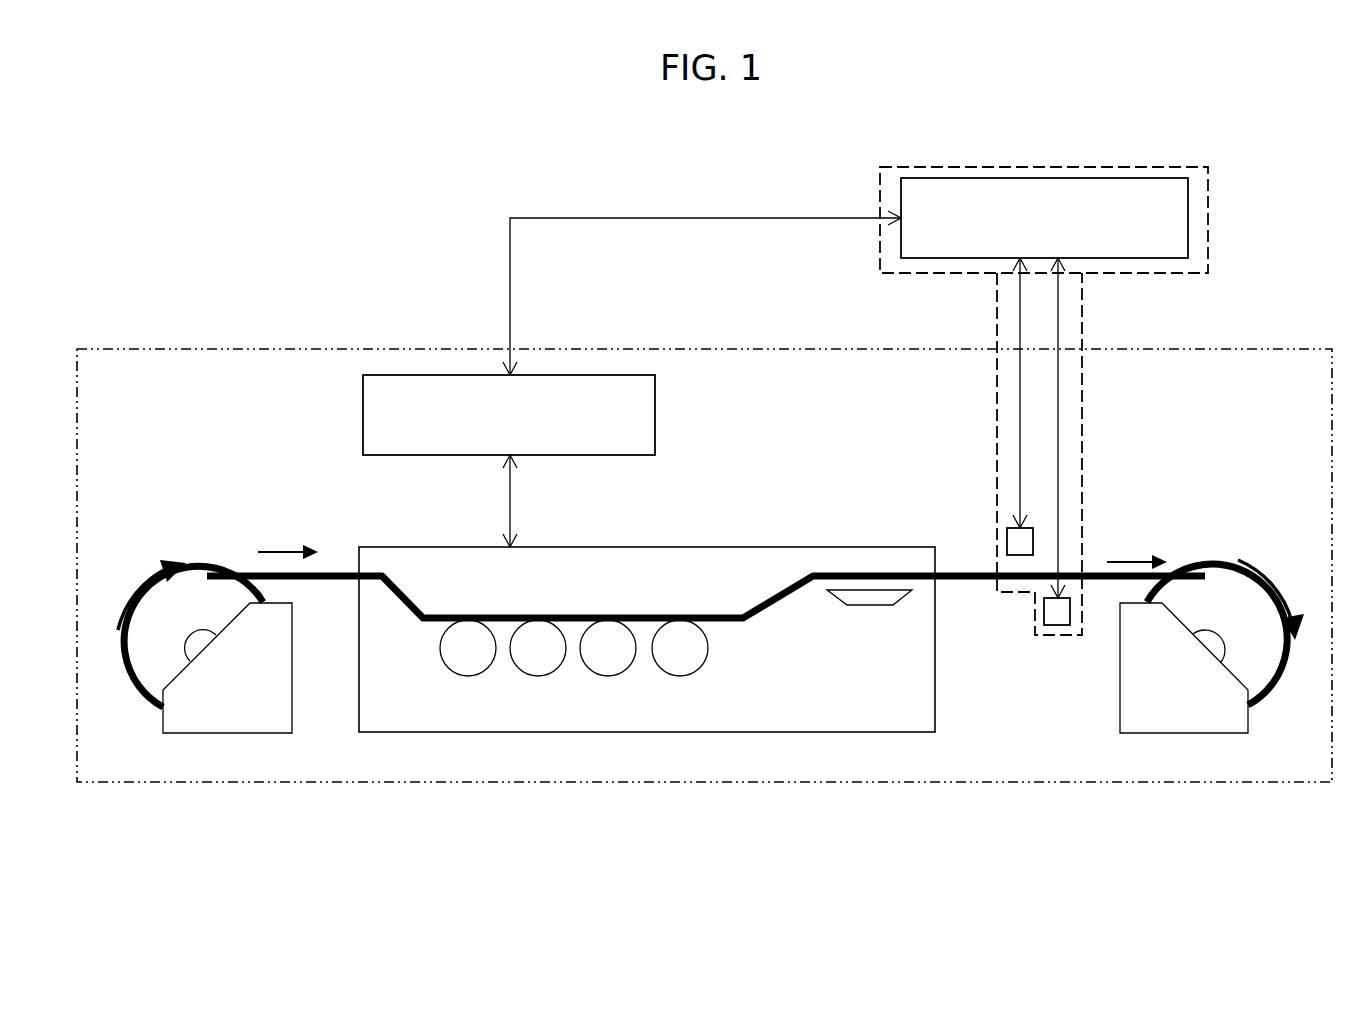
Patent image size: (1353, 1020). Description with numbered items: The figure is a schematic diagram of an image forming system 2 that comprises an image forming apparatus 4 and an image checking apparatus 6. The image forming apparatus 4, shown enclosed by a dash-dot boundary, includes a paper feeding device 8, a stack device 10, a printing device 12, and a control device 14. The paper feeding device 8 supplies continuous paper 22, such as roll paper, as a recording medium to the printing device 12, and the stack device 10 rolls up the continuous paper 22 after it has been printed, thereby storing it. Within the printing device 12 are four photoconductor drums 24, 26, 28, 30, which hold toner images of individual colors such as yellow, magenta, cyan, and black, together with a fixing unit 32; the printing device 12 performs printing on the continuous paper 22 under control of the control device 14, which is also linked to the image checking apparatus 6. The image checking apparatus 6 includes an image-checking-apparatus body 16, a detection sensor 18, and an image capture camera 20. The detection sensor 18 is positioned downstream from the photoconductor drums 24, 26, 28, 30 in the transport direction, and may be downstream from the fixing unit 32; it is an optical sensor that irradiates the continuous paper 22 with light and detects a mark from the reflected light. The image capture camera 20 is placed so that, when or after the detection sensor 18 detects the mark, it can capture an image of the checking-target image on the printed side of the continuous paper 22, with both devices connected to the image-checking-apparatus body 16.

The image forming system 2 is at (352, 214).
The image forming apparatus 4 is at (1238, 348).
The image checking apparatus 6 is at (1107, 165).
The paper feeding device 8 is at (292, 695).
The stack device 10 is at (1120, 705).
The printing device 12 is at (683, 545).
The control device 14 is at (655, 395).
The image-checking-apparatus body 16 is at (1188, 228).
The detection sensor 18 is at (1007, 535).
The image capture camera 20 is at (1043, 618).
The continuous paper 22 is at (337, 573).
The photoconductor drum 24 is at (473, 675).
The photoconductor drum 26 is at (543, 675).
The photoconductor drum 28 is at (613, 675).
The photoconductor drum 30 is at (685, 675).
The fixing unit 32 is at (873, 605).